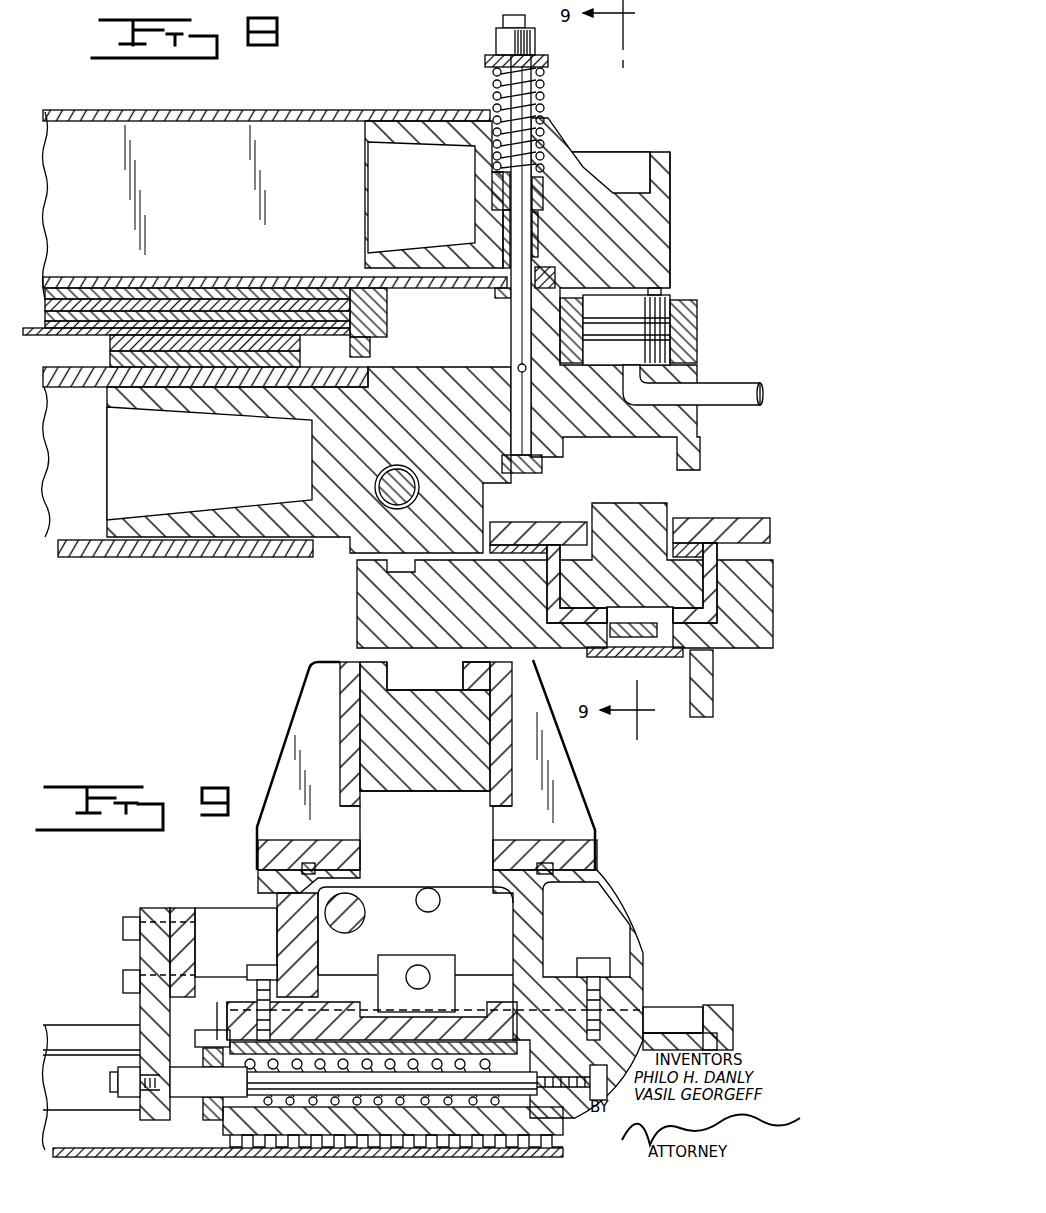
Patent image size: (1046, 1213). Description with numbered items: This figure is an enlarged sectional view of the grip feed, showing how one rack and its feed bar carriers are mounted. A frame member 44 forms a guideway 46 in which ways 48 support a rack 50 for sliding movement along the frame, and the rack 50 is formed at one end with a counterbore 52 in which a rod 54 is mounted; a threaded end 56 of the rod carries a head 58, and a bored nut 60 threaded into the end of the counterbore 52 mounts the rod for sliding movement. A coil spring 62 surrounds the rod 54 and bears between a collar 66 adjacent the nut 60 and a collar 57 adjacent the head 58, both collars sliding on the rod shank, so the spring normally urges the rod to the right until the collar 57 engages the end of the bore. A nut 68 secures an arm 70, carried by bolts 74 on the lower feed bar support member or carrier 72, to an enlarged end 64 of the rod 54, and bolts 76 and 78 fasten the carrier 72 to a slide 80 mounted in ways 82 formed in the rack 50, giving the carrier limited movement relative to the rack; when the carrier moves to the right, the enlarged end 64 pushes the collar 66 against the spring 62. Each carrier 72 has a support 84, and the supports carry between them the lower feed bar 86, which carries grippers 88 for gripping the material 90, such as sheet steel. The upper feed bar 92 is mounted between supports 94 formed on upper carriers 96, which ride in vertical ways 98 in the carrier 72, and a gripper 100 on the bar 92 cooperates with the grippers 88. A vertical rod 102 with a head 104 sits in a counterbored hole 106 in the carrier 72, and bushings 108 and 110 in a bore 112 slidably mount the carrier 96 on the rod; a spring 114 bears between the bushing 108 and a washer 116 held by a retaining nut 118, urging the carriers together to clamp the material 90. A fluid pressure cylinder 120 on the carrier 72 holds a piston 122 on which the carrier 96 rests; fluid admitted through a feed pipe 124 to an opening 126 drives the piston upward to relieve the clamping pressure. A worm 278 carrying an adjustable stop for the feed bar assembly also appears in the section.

In FIG. 8, the frame member 44 is at (748, 650).
In FIG. 9, the frame member 44 is at (67, 1030).
In FIG. 8, the guideway 46 is at (572, 623).
In FIG. 8, the ways 48 is at (600, 623).
In FIG. 8, the rack 50 is at (655, 525).
In FIG. 9, the rack 50 is at (495, 1130).
In FIG. 9, the counterbore 52 is at (420, 1095).
In FIG. 9, the rod 54 is at (345, 1092).
In FIG. 9, the threaded end 56 is at (565, 1105).
In FIG. 9, the collar 57 is at (508, 1040).
In FIG. 9, the head 58 is at (673, 1024).
In FIG. 9, the bored nut 60 is at (210, 1120).
In FIG. 9, the coil spring 62 is at (455, 1040).
In FIG. 9, the enlarged end 64 is at (190, 1097).
In FIG. 9, the collar 66 is at (232, 1037).
In FIG. 9, the nut 68 is at (125, 1097).
In FIG. 9, the arm 70 is at (145, 1015).
In FIG. 8, the lower feed bar support member 72 is at (705, 456).
In FIG. 9, the lower feed bar support member 72 is at (612, 870).
In FIG. 9, the bolt 74 is at (123, 920).
In FIG. 9, the bolt 76 is at (265, 962).
In FIG. 9, the bolt 78 is at (593, 960).
In FIG. 9, the slide 80 is at (637, 1013).
In FIG. 9, the ways 82 is at (705, 1005).
In FIG. 8, the support 84 is at (200, 545).
In FIG. 8, the lower feed bar 86 is at (78, 562).
In FIG. 8, the gripper 88 is at (302, 355).
In FIG. 8, the material 90 is at (72, 335).
In FIG. 8, the upper feed bar 92 is at (290, 112).
In FIG. 8, the support 94 is at (420, 125).
In FIG. 8, the upper feed bar carrier 96 is at (672, 178).
In FIG. 9, the upper feed bar carrier 96 is at (447, 690).
In FIG. 8, the vertical ways 98 is at (625, 168).
In FIG. 9, the vertical ways 98 is at (352, 662).
In FIG. 8, the gripper 100 is at (387, 320).
In FIG. 8, the rod 102 is at (511, 340).
In FIG. 8, the head 104 is at (528, 476).
In FIG. 8, the counterbored hole 106 is at (526, 365).
In FIG. 8, the bushing 108 is at (500, 195).
In FIG. 8, the bushing 110 is at (499, 300).
In FIG. 8, the bore 112 is at (505, 228).
In FIG. 8, the spring 114 is at (548, 100).
In FIG. 8, the washer 116 is at (548, 64).
In FIG. 8, the retaining nut 118 is at (496, 30).
In FIG. 8, the fluid pressure cylinder 120 is at (700, 318).
In FIG. 8, the piston 122 is at (640, 292).
In FIG. 8, the fluid pressure feed pipe 124 is at (748, 383).
In FIG. 8, the opening 126 is at (700, 345).
In FIG. 8, the worm 278 is at (373, 485).